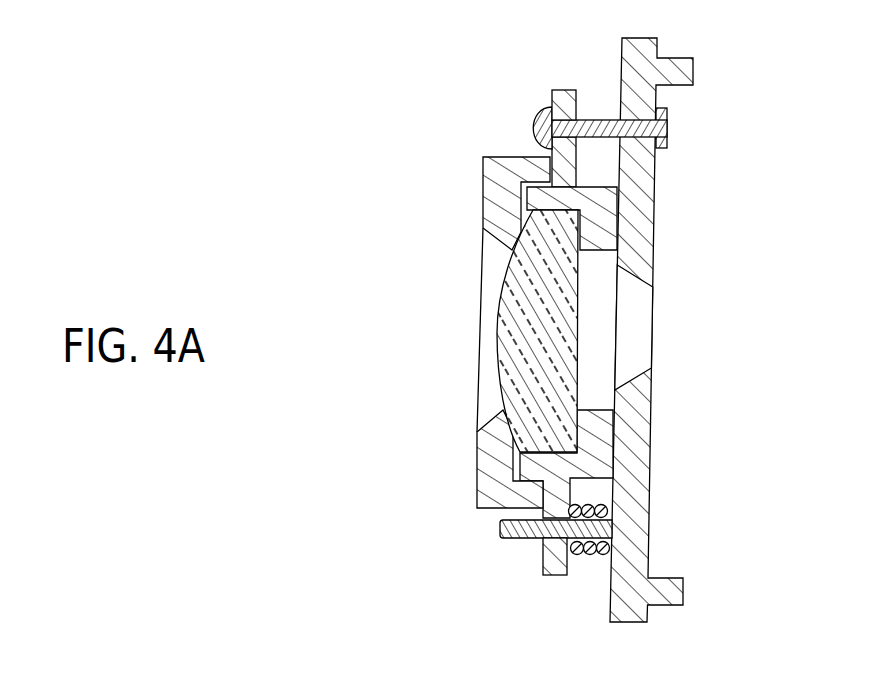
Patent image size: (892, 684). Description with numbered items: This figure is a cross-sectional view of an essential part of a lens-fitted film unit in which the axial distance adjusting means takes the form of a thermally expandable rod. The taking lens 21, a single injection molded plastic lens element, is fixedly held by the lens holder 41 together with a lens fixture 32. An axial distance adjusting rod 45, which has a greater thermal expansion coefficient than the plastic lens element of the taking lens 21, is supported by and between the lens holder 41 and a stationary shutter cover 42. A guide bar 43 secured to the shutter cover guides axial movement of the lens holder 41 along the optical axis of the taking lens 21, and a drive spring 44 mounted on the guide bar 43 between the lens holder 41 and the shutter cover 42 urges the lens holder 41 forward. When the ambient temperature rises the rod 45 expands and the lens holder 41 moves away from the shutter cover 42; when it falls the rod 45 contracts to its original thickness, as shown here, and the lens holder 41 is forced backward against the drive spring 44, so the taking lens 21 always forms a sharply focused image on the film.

The stationary shutter cover 42 is at (660, 47).
The axial distance adjusting rod 45 is at (600, 118).
The lens holder 41 is at (552, 95).
The lens fixture 32 is at (483, 173).
The taking lens 21 is at (498, 290).
The guide bar 43 is at (500, 528).
The drive spring 44 is at (587, 565).